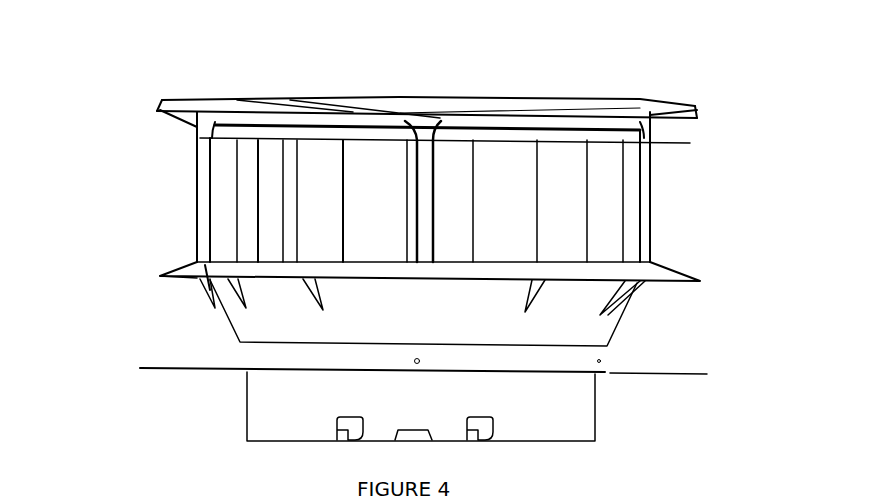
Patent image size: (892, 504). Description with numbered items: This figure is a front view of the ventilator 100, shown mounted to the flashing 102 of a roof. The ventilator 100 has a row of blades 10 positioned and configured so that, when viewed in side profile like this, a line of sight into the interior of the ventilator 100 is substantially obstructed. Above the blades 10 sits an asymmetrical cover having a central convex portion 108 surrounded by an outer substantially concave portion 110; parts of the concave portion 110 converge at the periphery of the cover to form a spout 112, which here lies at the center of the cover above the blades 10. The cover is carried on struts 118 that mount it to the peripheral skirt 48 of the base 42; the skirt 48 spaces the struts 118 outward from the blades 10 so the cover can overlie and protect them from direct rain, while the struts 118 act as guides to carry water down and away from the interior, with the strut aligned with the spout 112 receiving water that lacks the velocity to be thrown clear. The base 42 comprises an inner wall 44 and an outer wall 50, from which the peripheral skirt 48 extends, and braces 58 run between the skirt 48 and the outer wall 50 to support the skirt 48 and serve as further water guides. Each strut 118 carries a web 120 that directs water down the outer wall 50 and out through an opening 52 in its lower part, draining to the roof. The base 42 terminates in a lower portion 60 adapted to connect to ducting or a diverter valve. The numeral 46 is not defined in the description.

The ventilator 100 is at (622, 40).
The central convex portion 108 is at (412, 97).
The outer substantially concave portion 110 is at (257, 90).
The spout 112 is at (432, 117).
The blades 10 is at (232, 188).
The struts 118 is at (650, 182).
The peripheral skirt 48 is at (663, 277).
The braces 58 is at (650, 292).
The outer wall 50 is at (606, 332).
The web 120 is at (212, 273).
The inner wall 44 is at (253, 360).
The opening 52 is at (242, 347).
The base 42 is at (117, 362).
The seal 46 is at (600, 373).
The lower portion 60 is at (610, 437).
The flashing 102 is at (673, 378).